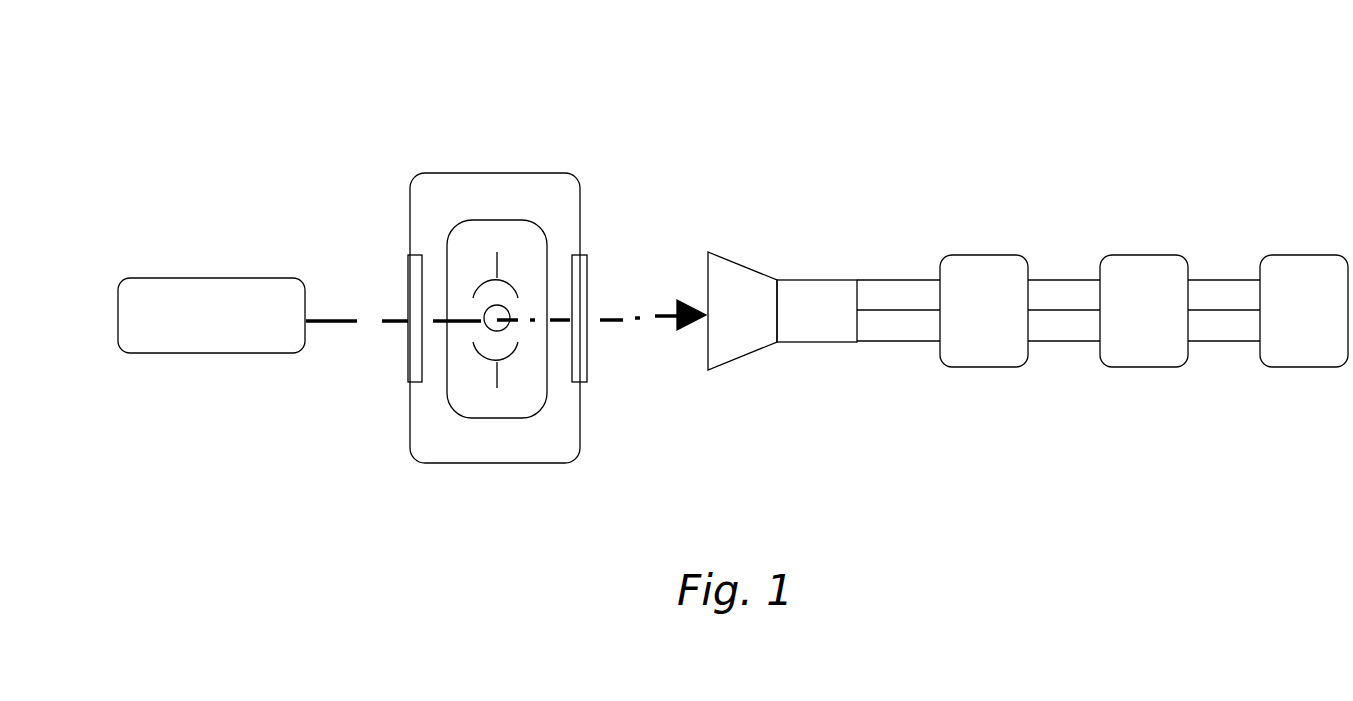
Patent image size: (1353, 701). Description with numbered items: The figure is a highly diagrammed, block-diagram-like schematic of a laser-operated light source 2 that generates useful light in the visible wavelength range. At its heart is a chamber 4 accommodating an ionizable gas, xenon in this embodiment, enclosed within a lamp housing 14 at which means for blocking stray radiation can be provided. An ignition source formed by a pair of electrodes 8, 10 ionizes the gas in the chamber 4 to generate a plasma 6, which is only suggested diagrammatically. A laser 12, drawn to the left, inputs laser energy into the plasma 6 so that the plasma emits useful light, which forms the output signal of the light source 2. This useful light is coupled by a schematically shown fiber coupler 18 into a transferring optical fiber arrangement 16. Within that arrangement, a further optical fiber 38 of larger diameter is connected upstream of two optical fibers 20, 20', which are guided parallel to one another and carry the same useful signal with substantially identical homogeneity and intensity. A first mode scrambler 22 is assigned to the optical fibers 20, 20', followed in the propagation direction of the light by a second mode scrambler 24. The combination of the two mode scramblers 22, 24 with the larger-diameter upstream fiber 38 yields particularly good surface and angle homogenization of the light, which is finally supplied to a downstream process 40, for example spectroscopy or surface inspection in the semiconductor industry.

The laser-operated light source 2 is at (778, 118).
The chamber 4 is at (537, 232).
The plasma 6 is at (490, 310).
The electrode 8 is at (507, 353).
The electrode 10 is at (500, 278).
The laser 12 is at (210, 355).
The lamp housing 14 is at (498, 463).
The optical fiber arrangement 16 is at (872, 393).
The fiber coupler 18 is at (737, 263).
The optical fiber 20 is at (1058, 265).
The optical fiber 20' is at (1058, 366).
The first mode scrambler 22 is at (967, 325).
The second mode scrambler 24 is at (1125, 318).
The further optical fiber 38 is at (810, 330).
The downstream process 40 is at (1304, 311).